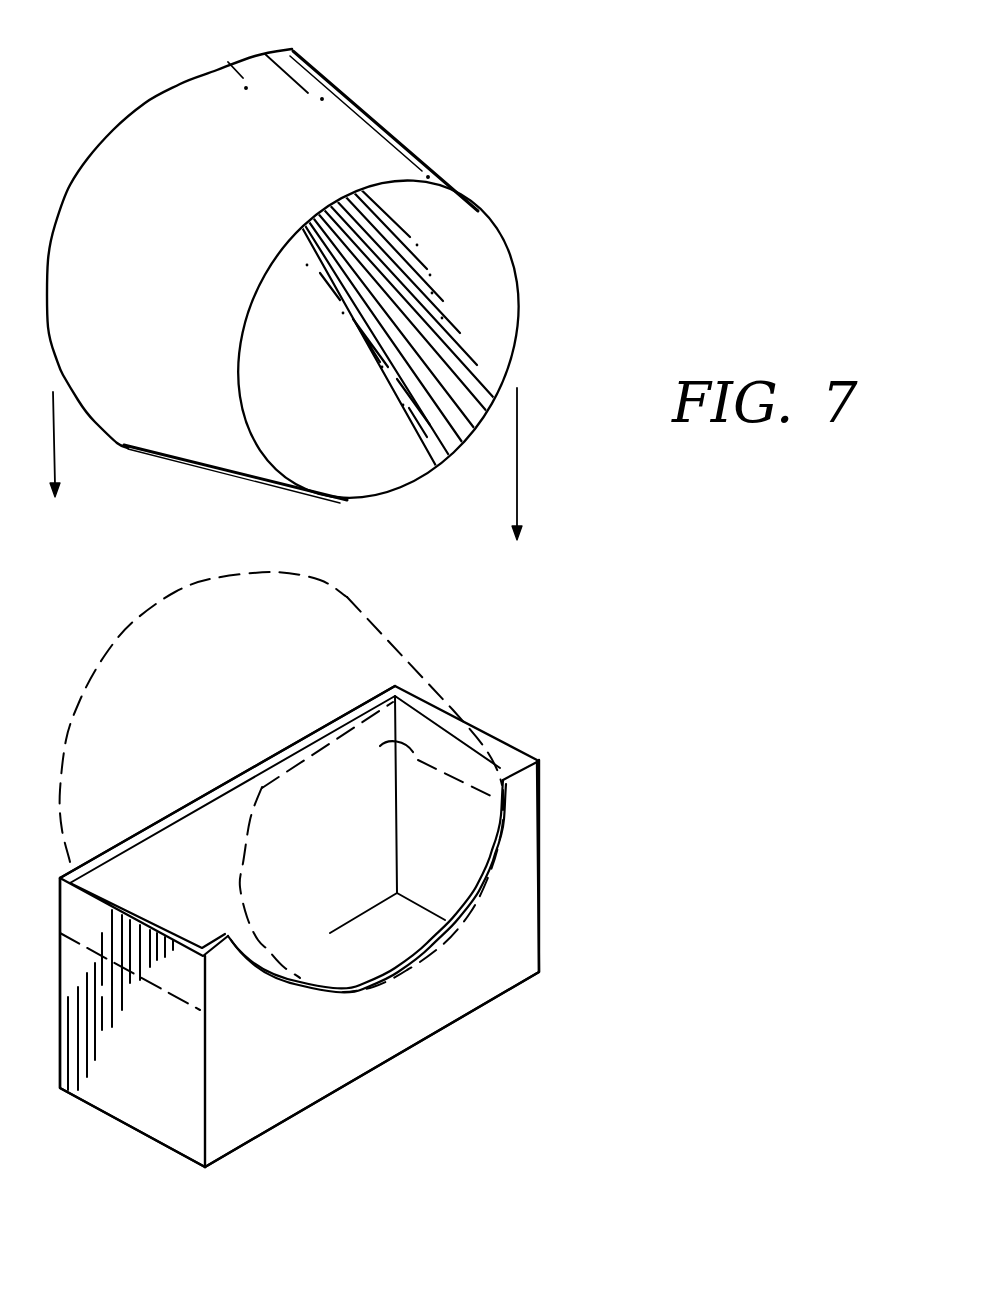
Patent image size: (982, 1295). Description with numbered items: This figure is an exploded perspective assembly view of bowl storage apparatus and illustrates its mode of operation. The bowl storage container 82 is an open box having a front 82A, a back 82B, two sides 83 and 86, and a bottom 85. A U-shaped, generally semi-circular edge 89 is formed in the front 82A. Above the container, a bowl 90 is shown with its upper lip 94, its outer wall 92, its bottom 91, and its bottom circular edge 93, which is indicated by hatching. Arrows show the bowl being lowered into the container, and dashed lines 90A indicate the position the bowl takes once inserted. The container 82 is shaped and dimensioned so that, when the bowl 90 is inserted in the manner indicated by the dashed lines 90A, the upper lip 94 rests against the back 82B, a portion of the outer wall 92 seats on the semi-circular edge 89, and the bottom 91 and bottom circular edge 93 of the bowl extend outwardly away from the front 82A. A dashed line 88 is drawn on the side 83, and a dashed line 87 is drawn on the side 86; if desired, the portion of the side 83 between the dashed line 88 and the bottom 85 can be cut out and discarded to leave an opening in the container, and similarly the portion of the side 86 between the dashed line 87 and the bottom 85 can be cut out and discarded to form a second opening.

The bowl 90 is at (313, 458).
The dashed lines 90A is at (440, 666).
The bottom 91 is at (502, 290).
The outer wall 92 is at (182, 107).
The bottom circular edge 93 is at (270, 268).
The upper lip 94 is at (114, 131).
The bowl storage container 82 is at (353, 927).
The front 82A is at (520, 932).
The back 82B is at (183, 830).
The side 83 is at (163, 1108).
The bottom 85 is at (347, 935).
The side 86 is at (405, 772).
The dashed line 87 is at (373, 748).
The dashed line 88 is at (187, 1003).
The U-shaped, generally semi-circular edge 89 is at (480, 843).